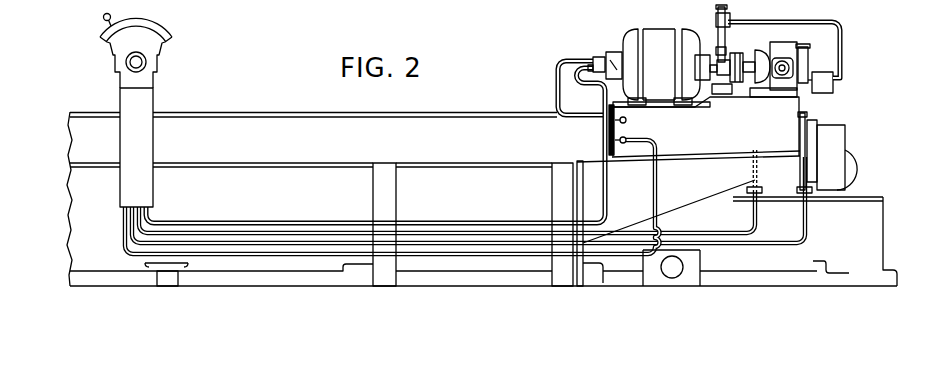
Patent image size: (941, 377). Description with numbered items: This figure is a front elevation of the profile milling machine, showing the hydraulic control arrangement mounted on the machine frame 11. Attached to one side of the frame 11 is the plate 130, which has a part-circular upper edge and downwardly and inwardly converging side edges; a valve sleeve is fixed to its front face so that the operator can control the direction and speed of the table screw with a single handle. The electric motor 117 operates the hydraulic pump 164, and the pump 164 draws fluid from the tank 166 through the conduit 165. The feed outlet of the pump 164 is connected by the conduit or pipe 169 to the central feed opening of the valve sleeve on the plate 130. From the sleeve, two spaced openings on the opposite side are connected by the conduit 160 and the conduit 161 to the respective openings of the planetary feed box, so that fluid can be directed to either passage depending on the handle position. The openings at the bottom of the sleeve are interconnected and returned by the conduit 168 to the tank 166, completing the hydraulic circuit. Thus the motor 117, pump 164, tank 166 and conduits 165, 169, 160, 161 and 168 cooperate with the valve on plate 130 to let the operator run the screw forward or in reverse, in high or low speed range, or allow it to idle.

The frame 11 is at (83, 193).
The plate 130 is at (152, 50).
The conduit 160 is at (268, 232).
The conduit 161 is at (317, 243).
The hydraulic pump 164 is at (607, 52).
The conduit 165 is at (557, 79).
The electric motor 117 is at (660, 79).
The tank 166 is at (735, 143).
The conduit 168 is at (660, 190).
The conduit or pipe 169 is at (510, 227).